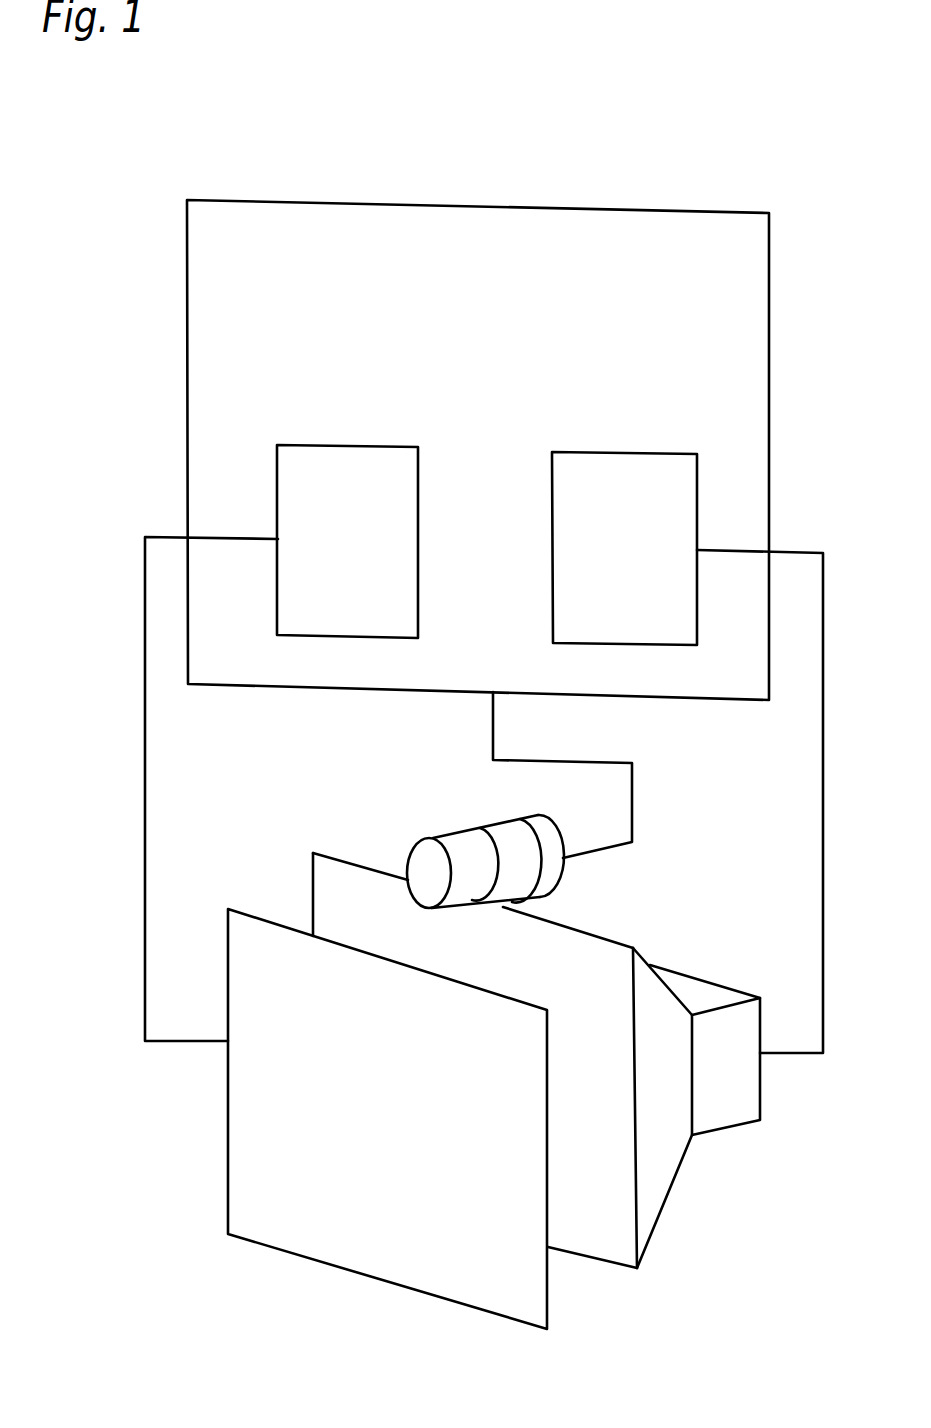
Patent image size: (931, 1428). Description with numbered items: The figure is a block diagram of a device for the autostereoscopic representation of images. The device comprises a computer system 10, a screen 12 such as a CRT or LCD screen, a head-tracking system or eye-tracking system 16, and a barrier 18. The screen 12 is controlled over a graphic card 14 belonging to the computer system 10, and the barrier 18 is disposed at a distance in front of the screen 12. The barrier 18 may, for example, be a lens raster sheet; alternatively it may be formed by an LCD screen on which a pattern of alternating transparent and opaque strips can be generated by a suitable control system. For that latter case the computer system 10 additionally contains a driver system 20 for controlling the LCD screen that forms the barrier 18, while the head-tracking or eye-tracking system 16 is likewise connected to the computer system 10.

The computer system 10 is at (480, 222).
The screen 12 is at (668, 1165).
The graphic card 14 is at (617, 465).
The head-tracking system or eye-tracking system 16 is at (418, 850).
The barrier 18 is at (238, 1182).
The driver system 20 is at (350, 458).